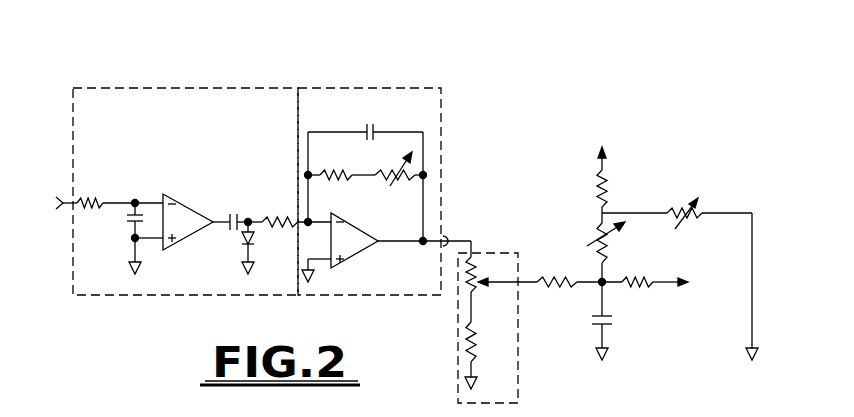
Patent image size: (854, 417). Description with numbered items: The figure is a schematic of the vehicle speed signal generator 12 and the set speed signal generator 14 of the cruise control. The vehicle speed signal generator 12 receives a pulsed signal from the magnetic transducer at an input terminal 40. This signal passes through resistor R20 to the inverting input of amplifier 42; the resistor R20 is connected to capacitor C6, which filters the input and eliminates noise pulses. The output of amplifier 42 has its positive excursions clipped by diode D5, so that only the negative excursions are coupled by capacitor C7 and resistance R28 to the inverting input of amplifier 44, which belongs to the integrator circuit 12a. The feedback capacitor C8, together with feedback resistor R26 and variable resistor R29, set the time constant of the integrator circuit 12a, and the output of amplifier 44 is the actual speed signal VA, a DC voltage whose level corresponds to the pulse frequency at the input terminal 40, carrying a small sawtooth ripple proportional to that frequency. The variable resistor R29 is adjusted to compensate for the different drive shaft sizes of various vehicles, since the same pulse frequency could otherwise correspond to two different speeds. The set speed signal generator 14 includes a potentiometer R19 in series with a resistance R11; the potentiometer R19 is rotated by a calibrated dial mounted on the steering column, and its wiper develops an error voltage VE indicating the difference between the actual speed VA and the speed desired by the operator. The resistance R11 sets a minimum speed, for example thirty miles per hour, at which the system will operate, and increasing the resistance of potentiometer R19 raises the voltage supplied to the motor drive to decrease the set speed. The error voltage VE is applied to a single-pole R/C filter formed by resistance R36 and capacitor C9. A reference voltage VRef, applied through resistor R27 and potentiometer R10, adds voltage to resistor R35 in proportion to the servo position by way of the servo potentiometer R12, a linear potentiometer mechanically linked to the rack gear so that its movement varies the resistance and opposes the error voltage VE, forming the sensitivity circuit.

The vehicle speed signal generator 12 is at (438, 70).
The integrator circuit 12a is at (335, 88).
The set speed signal generator 14 is at (511, 237).
The input terminal 40 is at (61, 199).
The amplifier 42 is at (183, 200).
The amplifier 44 is at (364, 233).
The resistor R20 is at (92, 192).
The capacitor C6 is at (127, 219).
The capacitor C7 is at (233, 214).
The resistance R28 is at (278, 209).
The diode D5 is at (256, 241).
The feedback capacitor C8 is at (368, 124).
The feedback resistor R26 is at (330, 166).
The variable resistor R29 is at (386, 169).
The actual speed signal VA is at (447, 236).
The potentiometer R19 is at (501, 274).
The resistance R11 is at (489, 342).
The resistance R36 is at (556, 272).
The resistor R35 is at (636, 272).
The error voltage VE is at (681, 286).
The capacitor C9 is at (608, 319).
The reference voltage VRef is at (601, 141).
The resistor R27 is at (606, 190).
The potentiometer R10 is at (613, 244).
The servo potentiometer R12 is at (684, 205).